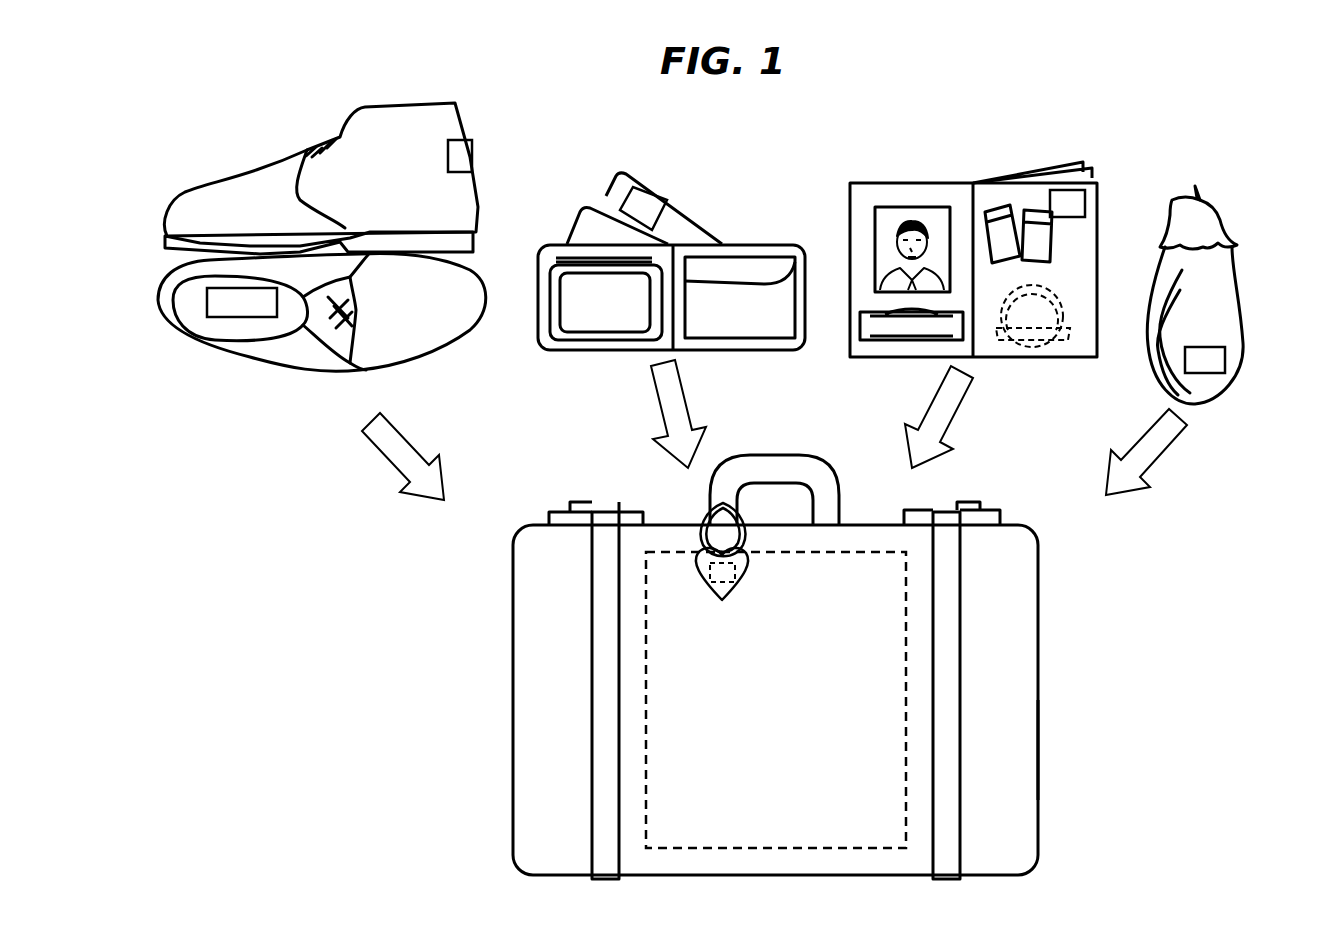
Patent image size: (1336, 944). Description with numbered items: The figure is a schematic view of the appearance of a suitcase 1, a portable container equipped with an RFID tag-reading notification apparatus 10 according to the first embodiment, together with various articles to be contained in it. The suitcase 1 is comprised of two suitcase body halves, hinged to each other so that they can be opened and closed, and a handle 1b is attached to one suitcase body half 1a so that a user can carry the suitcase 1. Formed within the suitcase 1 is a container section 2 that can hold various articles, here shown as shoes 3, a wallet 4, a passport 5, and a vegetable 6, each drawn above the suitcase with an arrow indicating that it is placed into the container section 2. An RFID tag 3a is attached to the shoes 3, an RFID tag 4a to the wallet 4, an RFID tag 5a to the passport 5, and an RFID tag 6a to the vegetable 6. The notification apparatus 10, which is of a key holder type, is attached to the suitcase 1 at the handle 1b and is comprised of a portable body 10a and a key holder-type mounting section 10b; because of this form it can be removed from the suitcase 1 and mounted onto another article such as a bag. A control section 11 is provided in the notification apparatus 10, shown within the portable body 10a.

The suitcase 1 is at (1055, 758).
The suitcase body half 1a is at (1040, 690).
The handle 1b is at (780, 465).
The container section 2 is at (856, 560).
The shoes 3 is at (268, 142).
The RFID tag 3a is at (478, 150).
The wallet 4 is at (733, 215).
The RFID tag 4a is at (643, 203).
The passport 5 is at (936, 158).
The RFID tag 5a is at (1066, 190).
The vegetable 6 is at (1232, 178).
The RFID tag 6a is at (1215, 357).
The RFID tag-reading notification apparatus 10 is at (726, 577).
The portable body 10a is at (748, 577).
The key holder-type mounting section 10b is at (698, 515).
The control section 11 is at (708, 596).